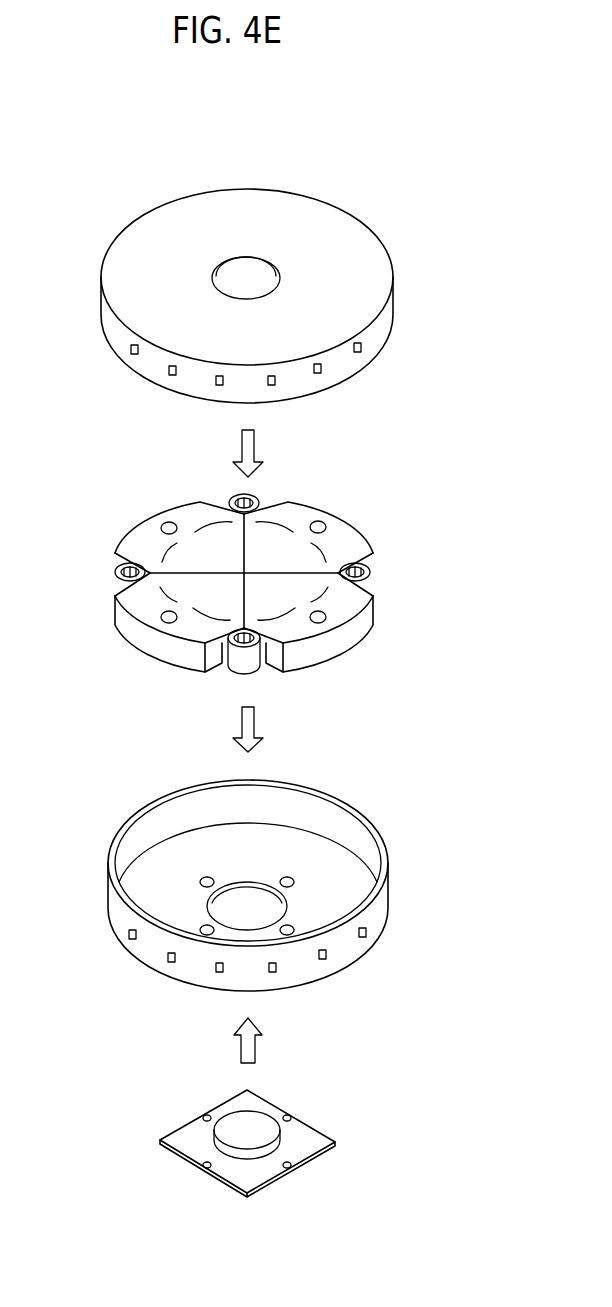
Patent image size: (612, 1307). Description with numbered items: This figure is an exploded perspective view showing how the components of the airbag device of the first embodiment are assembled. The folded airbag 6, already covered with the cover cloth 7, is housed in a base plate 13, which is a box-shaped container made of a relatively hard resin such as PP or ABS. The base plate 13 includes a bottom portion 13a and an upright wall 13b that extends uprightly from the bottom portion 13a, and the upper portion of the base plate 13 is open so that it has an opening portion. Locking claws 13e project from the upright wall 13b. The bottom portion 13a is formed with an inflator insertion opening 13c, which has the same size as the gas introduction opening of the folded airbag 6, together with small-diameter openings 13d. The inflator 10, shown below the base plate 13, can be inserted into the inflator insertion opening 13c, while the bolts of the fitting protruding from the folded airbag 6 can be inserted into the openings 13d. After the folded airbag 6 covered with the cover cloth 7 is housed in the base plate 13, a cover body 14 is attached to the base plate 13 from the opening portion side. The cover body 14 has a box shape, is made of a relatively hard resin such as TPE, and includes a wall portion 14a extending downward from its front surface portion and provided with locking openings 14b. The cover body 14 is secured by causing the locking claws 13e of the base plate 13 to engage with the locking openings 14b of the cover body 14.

The cover body 14 is at (122, 209).
The wall portion 14a is at (384, 334).
The locking openings 14b is at (325, 372).
The folded airbag 6 is at (262, 491).
The cover cloth 7 is at (351, 603).
The base plate 13 is at (122, 799).
The bottom portion 13a is at (337, 885).
The upright wall 13b is at (378, 917).
The inflator insertion opening 13c is at (290, 906).
The small-diameter openings 13d is at (285, 878).
The locking claws 13e is at (330, 961).
The inflator 10 is at (260, 1125).